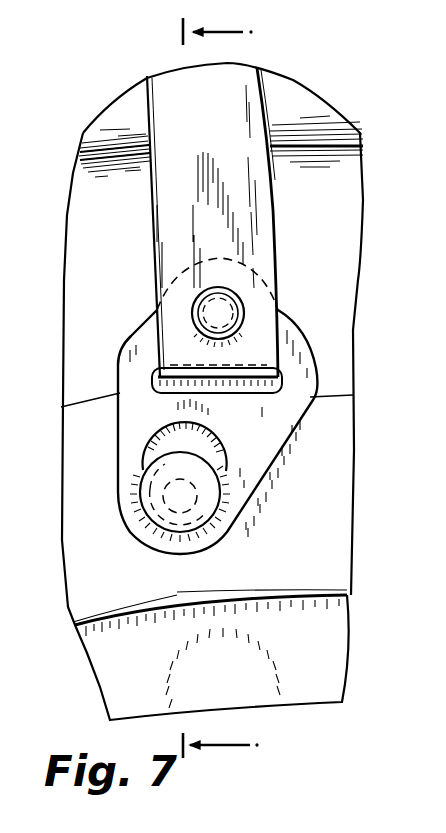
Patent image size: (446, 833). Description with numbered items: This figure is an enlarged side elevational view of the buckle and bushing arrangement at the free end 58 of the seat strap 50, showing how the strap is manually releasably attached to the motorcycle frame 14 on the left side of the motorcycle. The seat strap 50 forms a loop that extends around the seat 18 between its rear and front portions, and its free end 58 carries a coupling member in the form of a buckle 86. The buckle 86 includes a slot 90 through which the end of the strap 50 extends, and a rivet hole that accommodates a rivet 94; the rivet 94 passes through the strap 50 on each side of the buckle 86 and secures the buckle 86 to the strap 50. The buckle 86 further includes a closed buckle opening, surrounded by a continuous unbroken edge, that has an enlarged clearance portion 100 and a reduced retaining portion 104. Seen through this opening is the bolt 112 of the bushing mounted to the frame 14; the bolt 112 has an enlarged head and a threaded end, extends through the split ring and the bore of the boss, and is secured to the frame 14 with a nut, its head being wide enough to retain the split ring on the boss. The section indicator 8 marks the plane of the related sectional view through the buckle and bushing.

The section line 8- 8 is at (232, 389).
The frame 14 is at (315, 563).
The seat 18 is at (333, 123).
The seat strap 50 is at (185, 125).
The free end 58 is at (257, 196).
The buckle 86 is at (250, 434).
The slot 90 is at (270, 386).
The rivet 94 is at (205, 314).
The enlarged clearance portion 100 is at (218, 454).
The reduced retaining portion 104 is at (143, 521).
The bolt 112 is at (182, 520).